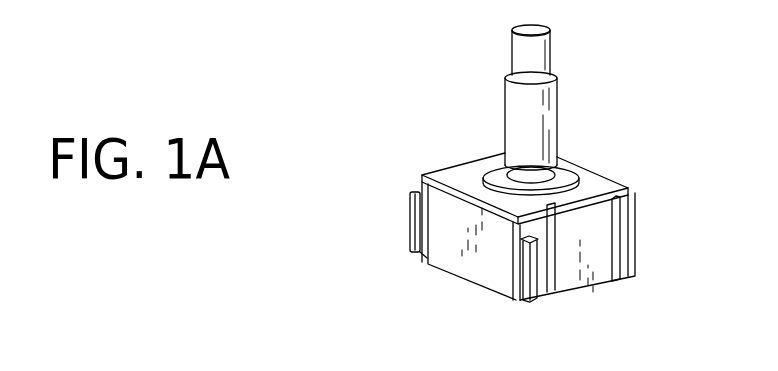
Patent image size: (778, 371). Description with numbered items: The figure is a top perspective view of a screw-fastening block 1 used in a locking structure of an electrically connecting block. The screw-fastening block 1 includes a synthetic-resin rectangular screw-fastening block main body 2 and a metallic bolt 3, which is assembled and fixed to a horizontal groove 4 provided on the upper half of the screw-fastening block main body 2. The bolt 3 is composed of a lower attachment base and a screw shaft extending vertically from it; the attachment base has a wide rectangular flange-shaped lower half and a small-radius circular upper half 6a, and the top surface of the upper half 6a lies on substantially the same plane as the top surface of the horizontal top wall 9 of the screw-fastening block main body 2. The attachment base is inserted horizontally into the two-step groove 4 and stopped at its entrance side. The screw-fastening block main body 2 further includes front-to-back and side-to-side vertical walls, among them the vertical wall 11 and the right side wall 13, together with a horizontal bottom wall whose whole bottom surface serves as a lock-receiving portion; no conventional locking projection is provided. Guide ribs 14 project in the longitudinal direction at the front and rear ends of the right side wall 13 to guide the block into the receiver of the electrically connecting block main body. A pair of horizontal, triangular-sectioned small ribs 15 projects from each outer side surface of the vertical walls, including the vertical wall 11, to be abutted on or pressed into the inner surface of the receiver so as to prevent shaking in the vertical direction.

The screw-fastening block 1 is at (667, 53).
The screw-fastening block main body 2 is at (564, 119).
The bolt 3 is at (556, 99).
The horizontal groove 4 is at (590, 182).
The circular upper half of the attachment base 6a is at (563, 168).
The top wall 9 is at (468, 172).
The vertical wall 11 is at (577, 265).
The right side wall 13 is at (457, 250).
The guide ribs 14 is at (408, 218).
The small ribs 15 is at (618, 262).